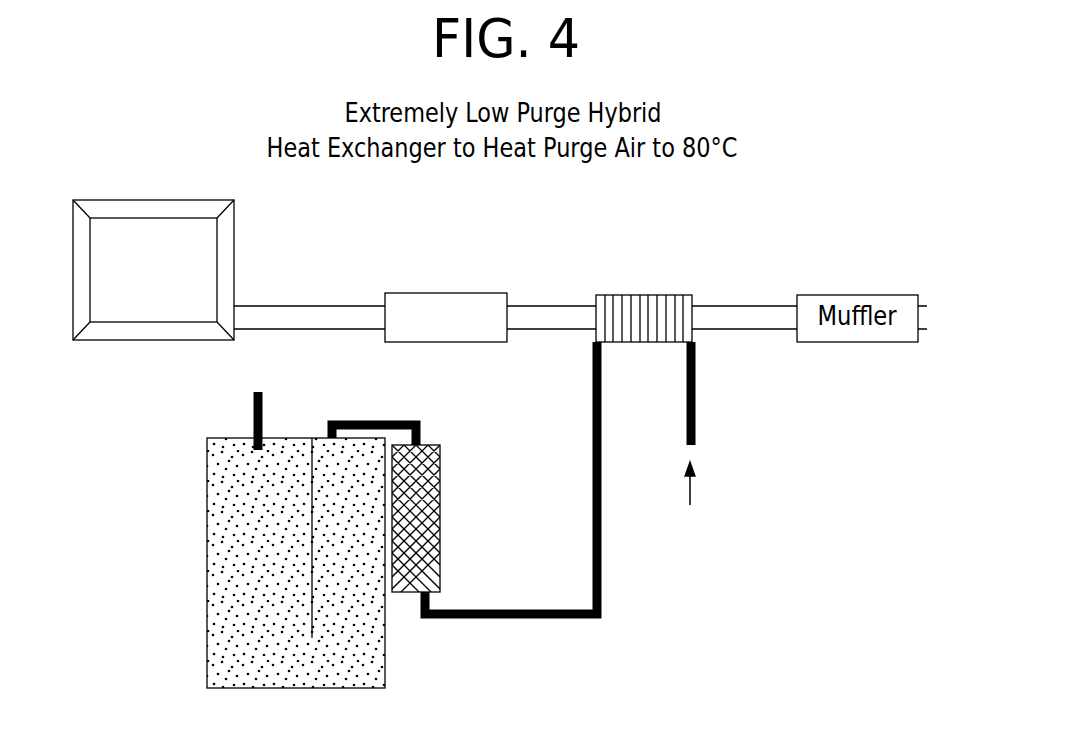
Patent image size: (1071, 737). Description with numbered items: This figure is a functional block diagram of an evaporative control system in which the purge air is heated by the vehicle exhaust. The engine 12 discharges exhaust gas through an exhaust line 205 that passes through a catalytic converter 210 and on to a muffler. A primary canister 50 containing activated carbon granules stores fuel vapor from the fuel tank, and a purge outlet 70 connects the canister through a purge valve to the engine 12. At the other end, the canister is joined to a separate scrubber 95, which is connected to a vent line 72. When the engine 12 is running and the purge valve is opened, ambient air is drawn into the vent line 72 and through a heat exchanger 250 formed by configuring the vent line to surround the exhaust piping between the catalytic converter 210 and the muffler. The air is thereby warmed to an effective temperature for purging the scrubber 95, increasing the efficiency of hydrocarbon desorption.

The engine 12 is at (73, 245).
The exhaust line 205 is at (278, 330).
The catalytic converter 210 is at (428, 292).
The heat exchanger 250 is at (640, 345).
The purge outlet 70 is at (253, 417).
The primary canister 50 is at (188, 481).
The scrubber 95 is at (441, 456).
The vent line 72 is at (583, 618).